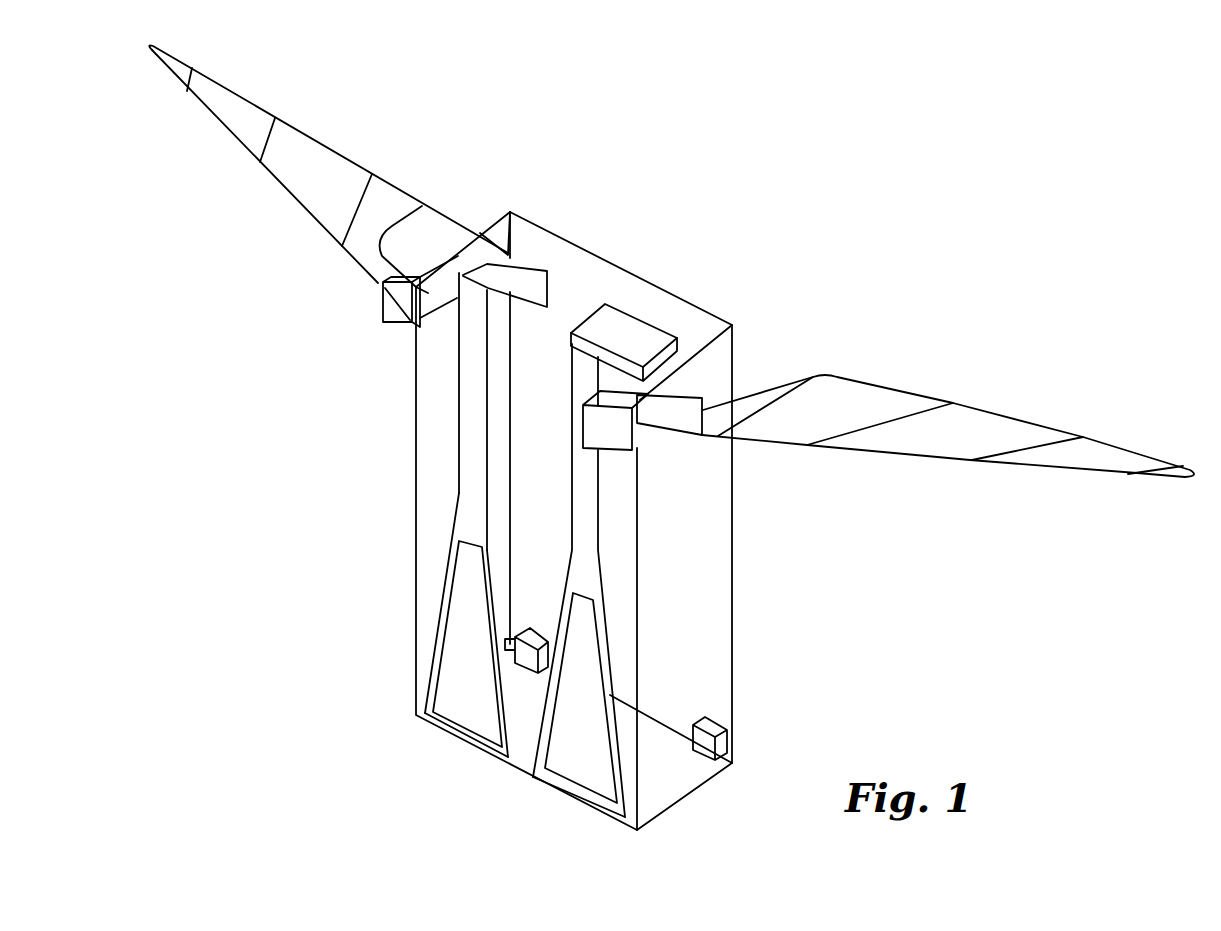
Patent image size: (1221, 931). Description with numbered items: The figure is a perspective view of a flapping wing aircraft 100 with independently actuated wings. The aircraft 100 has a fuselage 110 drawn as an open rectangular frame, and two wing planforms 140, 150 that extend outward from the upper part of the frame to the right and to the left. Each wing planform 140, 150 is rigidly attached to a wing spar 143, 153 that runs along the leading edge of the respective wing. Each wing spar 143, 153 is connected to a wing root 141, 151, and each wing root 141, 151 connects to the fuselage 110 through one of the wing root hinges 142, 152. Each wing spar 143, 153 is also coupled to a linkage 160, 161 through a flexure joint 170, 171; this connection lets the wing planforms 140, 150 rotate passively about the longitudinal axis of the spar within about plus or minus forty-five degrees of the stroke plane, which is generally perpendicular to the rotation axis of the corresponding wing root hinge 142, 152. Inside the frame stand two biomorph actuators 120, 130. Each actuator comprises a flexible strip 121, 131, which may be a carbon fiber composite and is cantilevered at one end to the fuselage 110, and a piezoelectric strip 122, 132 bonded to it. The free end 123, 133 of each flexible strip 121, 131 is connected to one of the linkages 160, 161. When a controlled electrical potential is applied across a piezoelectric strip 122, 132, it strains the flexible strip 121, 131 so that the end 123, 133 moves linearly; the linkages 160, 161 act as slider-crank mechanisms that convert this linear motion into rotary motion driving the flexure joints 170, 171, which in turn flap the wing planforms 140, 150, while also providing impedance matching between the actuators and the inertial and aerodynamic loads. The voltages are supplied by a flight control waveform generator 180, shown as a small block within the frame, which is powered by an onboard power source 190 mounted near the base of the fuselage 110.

The aircraft 100 is at (929, 136).
The fuselage 110 is at (710, 622).
The biomorph actuator 120 is at (476, 498).
The flexible strip 121 is at (435, 658).
The piezoelectric strip 122 is at (458, 686).
The end of flexible strip 123 is at (475, 305).
The biomorph actuator 130 is at (586, 537).
The flexible strip 131 is at (628, 730).
The piezoelectric strip 132 is at (568, 720).
The end of flexible strip 133 is at (588, 360).
The wing planform 140 is at (988, 425).
The wing root 141 is at (683, 417).
The wing root hinge 142 is at (690, 394).
The wing spar 143 is at (1012, 467).
The wing planform 150 is at (334, 157).
The wing root 151 is at (422, 206).
The wing root hinge 152 is at (413, 278).
The wing spar 153 is at (292, 197).
The linkage 160 is at (508, 255).
The linkage 161 is at (677, 338).
The flexure joint 170 is at (410, 322).
The flexure joint 171 is at (665, 430).
The flight control waveform generator 180 is at (516, 636).
The power source 190 is at (716, 742).